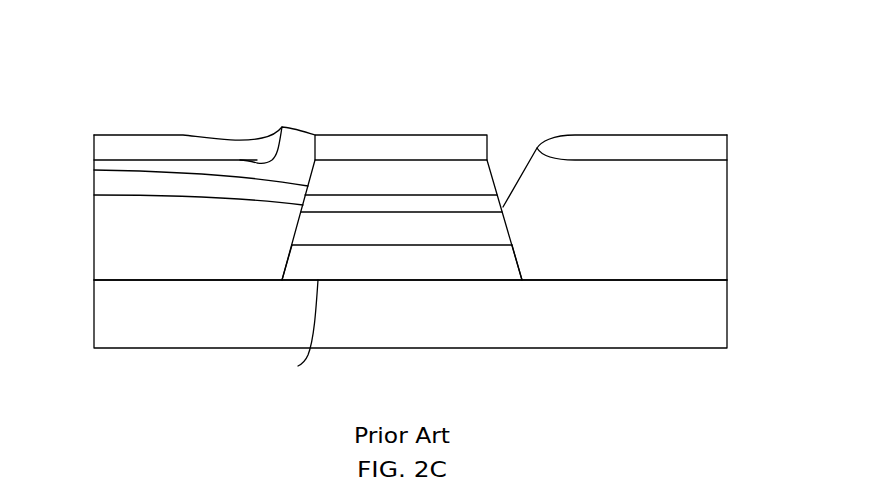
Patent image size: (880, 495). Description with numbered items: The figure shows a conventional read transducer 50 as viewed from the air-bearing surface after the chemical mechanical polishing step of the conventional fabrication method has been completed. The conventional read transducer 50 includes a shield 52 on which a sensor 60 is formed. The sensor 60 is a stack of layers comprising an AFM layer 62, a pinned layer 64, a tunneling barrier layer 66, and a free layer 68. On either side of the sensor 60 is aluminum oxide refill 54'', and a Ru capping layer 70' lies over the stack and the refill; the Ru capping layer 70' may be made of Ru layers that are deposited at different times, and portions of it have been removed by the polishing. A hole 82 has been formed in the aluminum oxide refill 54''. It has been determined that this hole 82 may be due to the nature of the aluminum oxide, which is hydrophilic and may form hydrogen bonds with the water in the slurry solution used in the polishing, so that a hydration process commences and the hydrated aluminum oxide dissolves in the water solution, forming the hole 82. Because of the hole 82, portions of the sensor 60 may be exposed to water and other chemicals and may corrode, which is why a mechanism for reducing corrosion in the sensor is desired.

The conventional read transducer 50 is at (418, 52).
The shield 52 is at (727, 335).
The aluminum oxide refill 54'' is at (412, 244).
The sensor 60 is at (470, 298).
The AFM layer 62 is at (285, 329).
The pinned layer 64 is at (500, 247).
The tunneling barrier layer 66 is at (94, 195).
The free layer 68 is at (94, 170).
The Ru capping layer 70' is at (385, 116).
The hole 82 is at (511, 142).